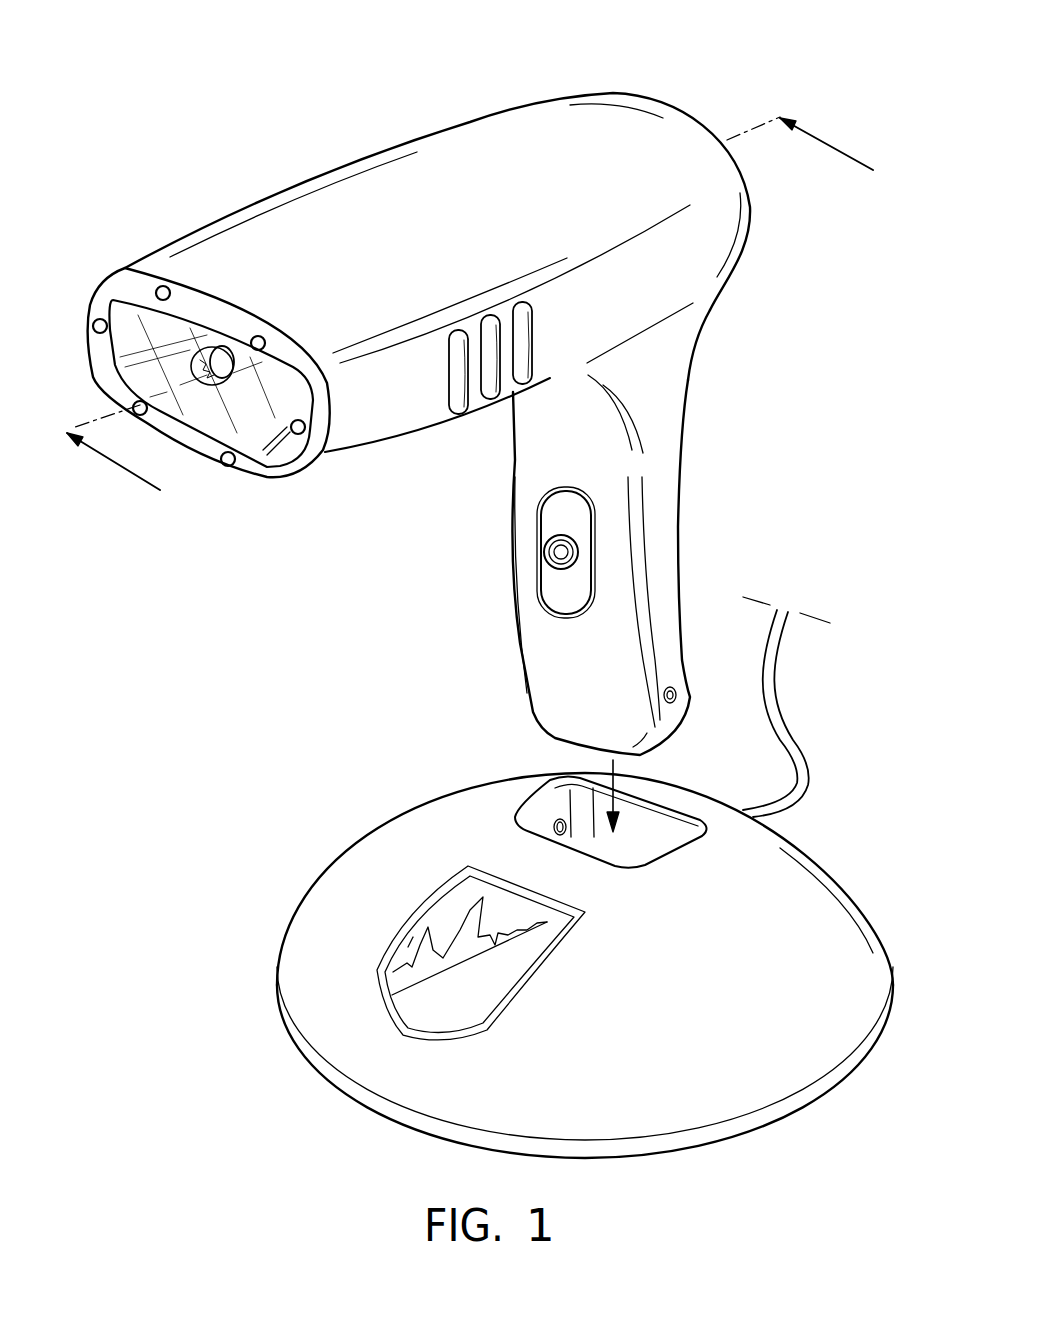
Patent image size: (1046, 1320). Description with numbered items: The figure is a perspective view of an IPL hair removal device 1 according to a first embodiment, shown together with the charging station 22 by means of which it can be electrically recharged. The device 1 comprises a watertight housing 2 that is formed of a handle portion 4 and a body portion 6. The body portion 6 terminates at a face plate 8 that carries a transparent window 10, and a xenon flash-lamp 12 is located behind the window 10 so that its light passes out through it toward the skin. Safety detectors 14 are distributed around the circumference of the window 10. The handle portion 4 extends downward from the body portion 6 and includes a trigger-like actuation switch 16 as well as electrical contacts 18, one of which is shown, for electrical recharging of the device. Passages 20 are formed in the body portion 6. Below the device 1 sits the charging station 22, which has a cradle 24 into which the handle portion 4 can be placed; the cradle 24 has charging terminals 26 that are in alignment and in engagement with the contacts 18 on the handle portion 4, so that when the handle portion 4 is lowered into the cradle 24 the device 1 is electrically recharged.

The IPL hair removal device 1 is at (194, 70).
The watertight housing 2 is at (750, 198).
The handle portion 4 is at (665, 478).
The body portion 6 is at (462, 153).
The face plate 8 is at (320, 433).
The transparent window 10 is at (257, 417).
The xenon flash-lamp 12 is at (207, 380).
The safety detectors 14 is at (160, 292).
The trigger-like actuation switch 16 is at (557, 553).
The electrical contacts 18 is at (676, 700).
The passages 20 is at (491, 400).
The charging station 22 is at (800, 880).
The cradle 24 is at (530, 802).
The charging terminals 26 is at (560, 818).